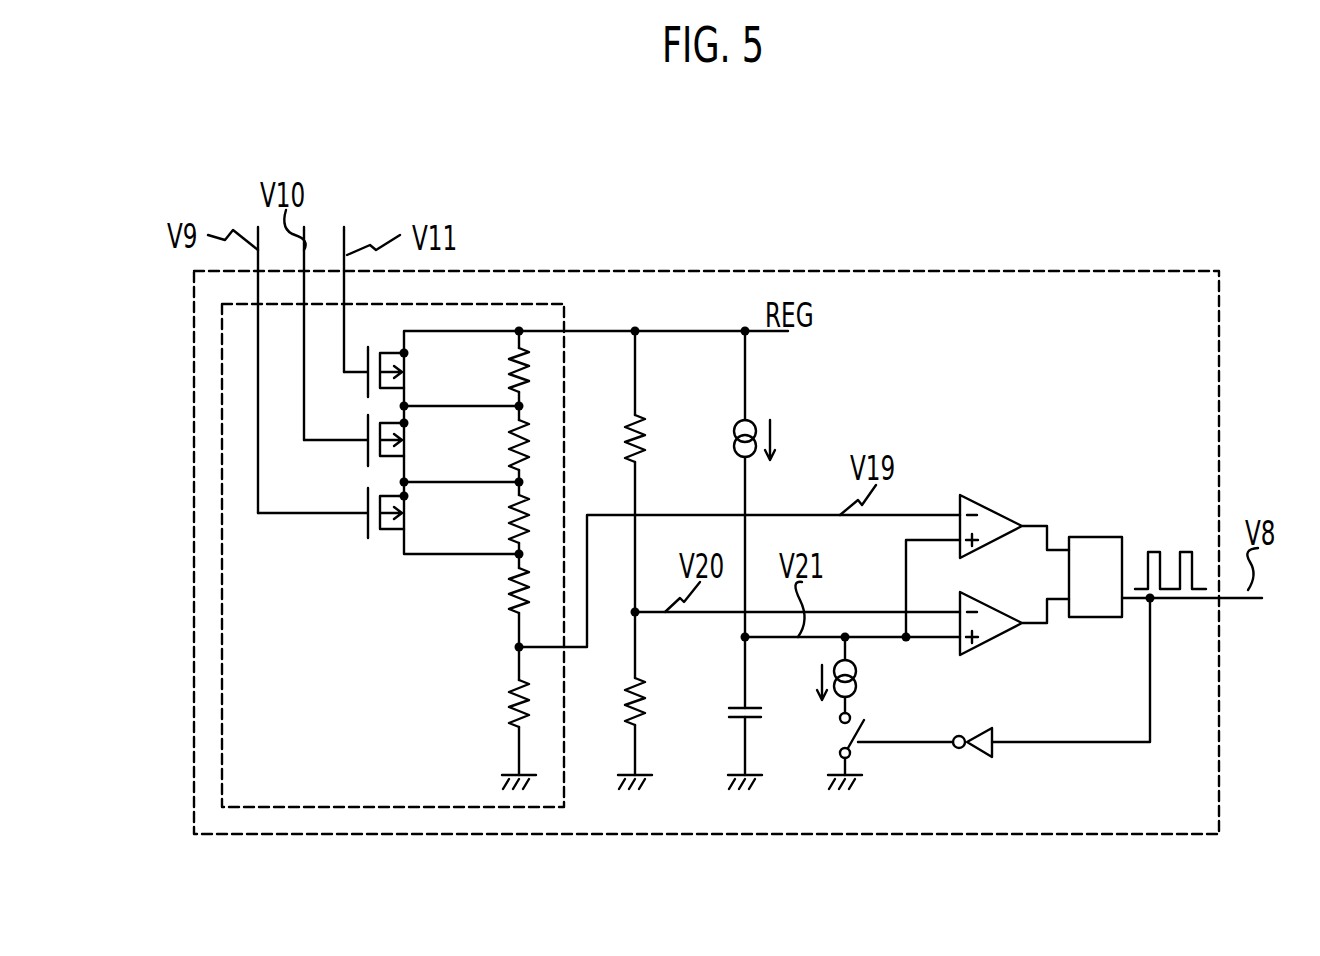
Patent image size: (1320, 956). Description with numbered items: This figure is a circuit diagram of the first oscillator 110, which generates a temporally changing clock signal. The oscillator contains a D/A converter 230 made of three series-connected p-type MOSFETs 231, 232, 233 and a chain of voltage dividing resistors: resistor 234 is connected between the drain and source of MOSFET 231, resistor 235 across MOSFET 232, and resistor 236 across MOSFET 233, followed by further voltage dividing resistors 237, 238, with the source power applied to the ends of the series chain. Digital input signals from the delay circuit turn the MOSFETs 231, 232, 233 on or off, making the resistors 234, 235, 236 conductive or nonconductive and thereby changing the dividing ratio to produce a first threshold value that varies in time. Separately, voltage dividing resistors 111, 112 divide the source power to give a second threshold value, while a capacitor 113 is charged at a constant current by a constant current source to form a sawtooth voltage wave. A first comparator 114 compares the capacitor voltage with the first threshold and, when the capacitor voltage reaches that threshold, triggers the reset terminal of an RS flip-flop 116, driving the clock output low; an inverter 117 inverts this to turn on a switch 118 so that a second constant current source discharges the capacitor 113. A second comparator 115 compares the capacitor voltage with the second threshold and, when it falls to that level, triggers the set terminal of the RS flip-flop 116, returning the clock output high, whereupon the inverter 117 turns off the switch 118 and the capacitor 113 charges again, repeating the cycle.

The first oscillator 110 is at (992, 271).
The voltage dividing resistor 111 is at (650, 420).
The voltage dividing resistor 112 is at (645, 680).
The capacitor 113 is at (735, 722).
The first comparator 114 is at (985, 500).
The second comparator 115 is at (990, 640).
The RS flip-flop 116 is at (1082, 537).
The inverter 117 is at (975, 757).
The switch 118 is at (840, 733).
The D/A converter 230 is at (540, 304).
The p-type MOSFET 231 is at (406, 355).
The p-type MOSFET 232 is at (406, 425).
The p-type MOSFET 233 is at (406, 496).
The voltage dividing resistor 234 is at (506, 371).
The voltage dividing resistor 235 is at (510, 448).
The voltage dividing resistor 236 is at (510, 520).
The voltage dividing resistor 237 is at (510, 592).
The voltage dividing resistor 238 is at (508, 700).